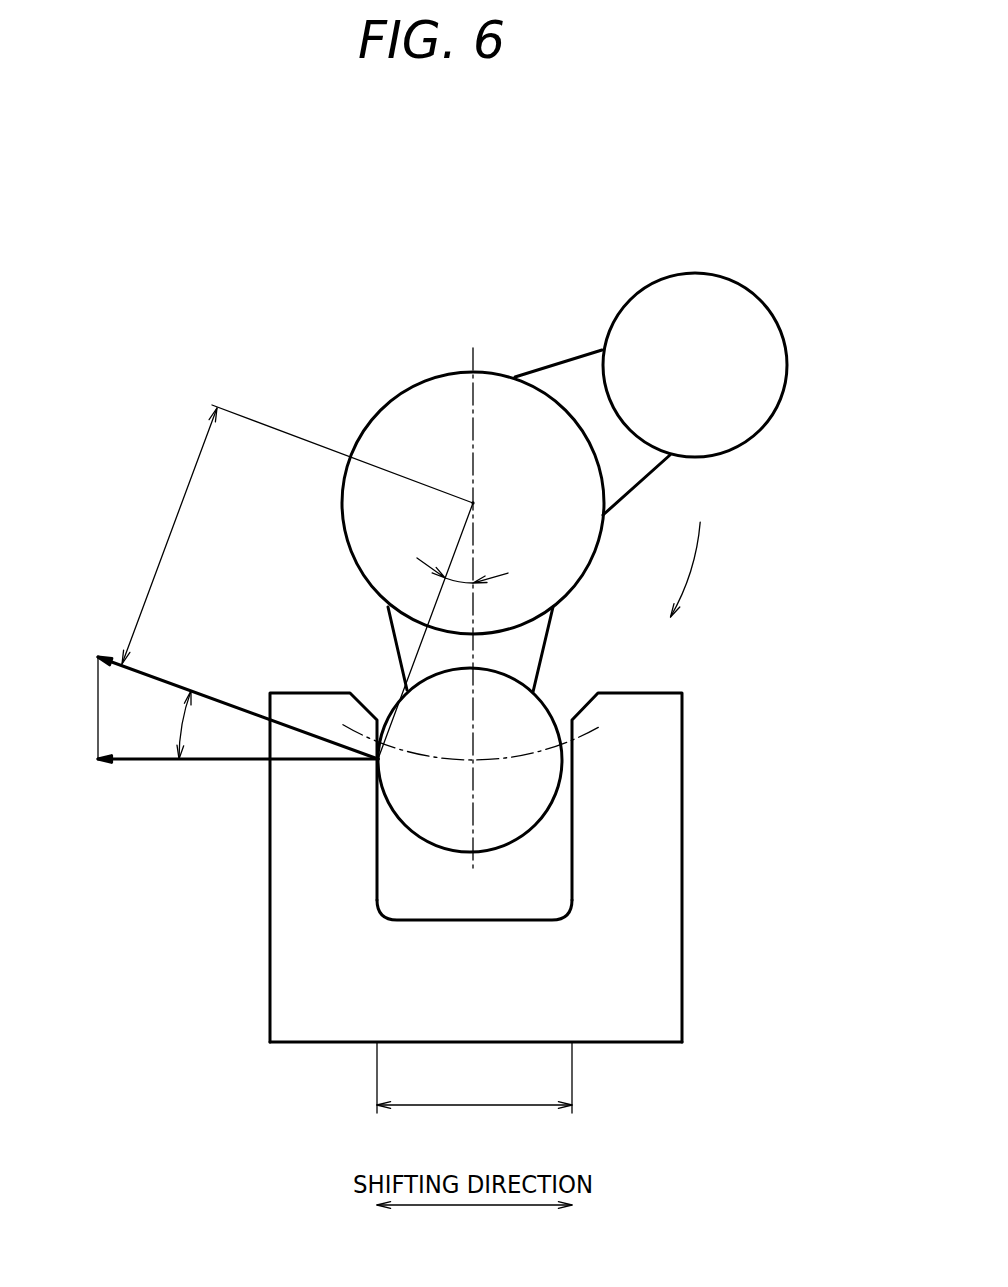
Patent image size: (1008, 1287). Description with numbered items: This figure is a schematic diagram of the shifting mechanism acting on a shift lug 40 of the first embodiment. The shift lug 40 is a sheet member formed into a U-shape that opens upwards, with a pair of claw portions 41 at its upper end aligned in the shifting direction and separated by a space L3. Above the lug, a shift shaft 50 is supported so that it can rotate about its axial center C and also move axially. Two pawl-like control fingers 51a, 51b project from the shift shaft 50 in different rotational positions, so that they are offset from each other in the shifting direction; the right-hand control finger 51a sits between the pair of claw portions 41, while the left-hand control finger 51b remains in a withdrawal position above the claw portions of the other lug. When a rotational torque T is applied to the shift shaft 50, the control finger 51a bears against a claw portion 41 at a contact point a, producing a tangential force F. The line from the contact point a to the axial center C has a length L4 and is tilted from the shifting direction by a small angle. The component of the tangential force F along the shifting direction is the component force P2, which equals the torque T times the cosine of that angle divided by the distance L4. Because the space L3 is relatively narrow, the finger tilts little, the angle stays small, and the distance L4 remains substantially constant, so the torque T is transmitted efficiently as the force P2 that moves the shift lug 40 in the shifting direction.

The shift shaft 50 is at (432, 393).
The right-hand control finger 51a is at (525, 805).
The left-hand control finger 51b is at (767, 367).
The shift lug 40 is at (478, 909).
The claw portions 41 is at (282, 843).
The axial center of the shift shaft C is at (473, 503).
The contact point a is at (374, 762).
The tangential force F is at (227, 698).
The component force P2 is at (218, 716).
The rotational torque T is at (696, 569).
The space between the pair of claw portions L3 is at (474, 1077).
The distance from contact point to axial center L4 is at (169, 536).